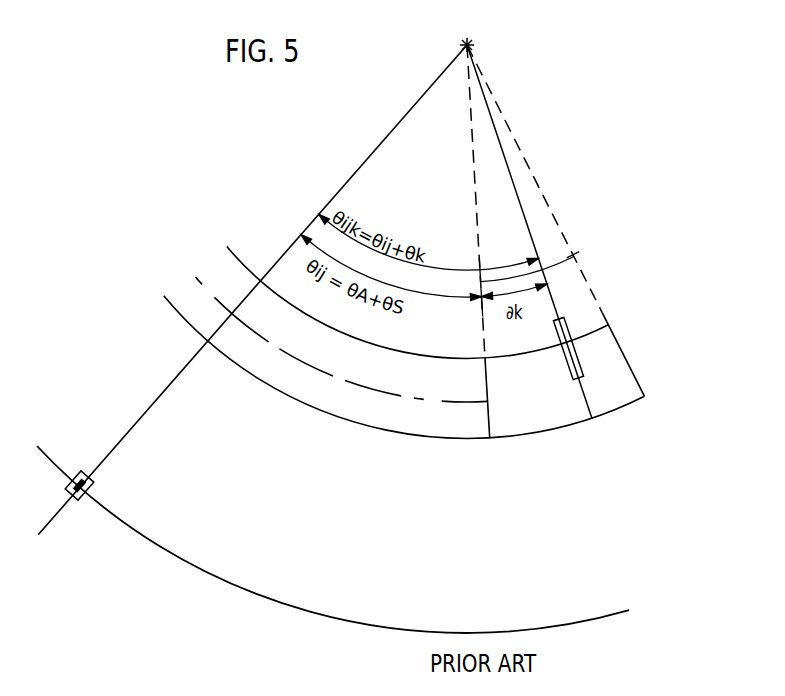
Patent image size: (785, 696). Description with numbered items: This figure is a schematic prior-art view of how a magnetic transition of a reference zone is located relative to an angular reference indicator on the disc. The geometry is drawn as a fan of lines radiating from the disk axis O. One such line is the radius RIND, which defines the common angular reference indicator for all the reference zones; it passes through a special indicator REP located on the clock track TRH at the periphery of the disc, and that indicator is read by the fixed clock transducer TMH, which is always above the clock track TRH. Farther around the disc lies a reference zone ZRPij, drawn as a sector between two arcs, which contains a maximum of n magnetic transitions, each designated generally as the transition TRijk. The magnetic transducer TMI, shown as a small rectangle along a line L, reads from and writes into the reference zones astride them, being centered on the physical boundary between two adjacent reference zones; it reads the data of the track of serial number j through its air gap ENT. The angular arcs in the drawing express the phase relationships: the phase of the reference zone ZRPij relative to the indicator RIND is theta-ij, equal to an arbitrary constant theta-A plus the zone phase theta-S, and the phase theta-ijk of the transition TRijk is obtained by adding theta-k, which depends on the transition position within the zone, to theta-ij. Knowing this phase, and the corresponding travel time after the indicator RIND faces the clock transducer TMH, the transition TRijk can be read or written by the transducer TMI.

The disk axis O is at (529, 42).
The radius RIND (angular reference indicator) RIND is at (325, 206).
The clock track TRH is at (227, 583).
The fixed clock transducer TMH is at (78, 500).
The special indicator REP is at (92, 482).
The reference line L is at (525, 222).
The reference zone ZRPij is at (645, 382).
The magnetic transition TRijk is at (585, 406).
The magnetic transducer TMI is at (583, 364).
The air gap ENT is at (566, 318).